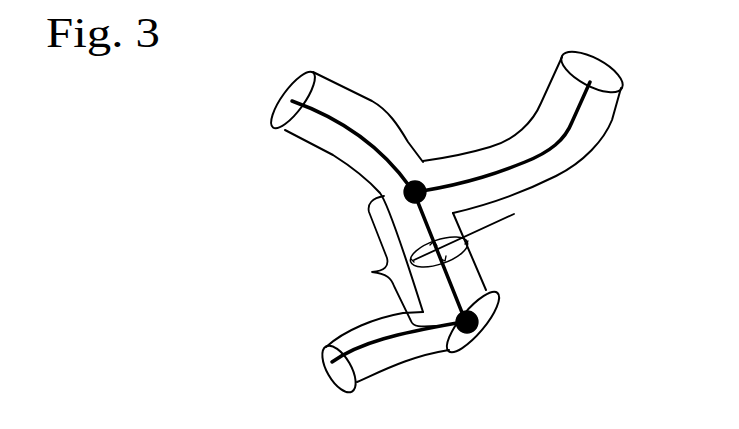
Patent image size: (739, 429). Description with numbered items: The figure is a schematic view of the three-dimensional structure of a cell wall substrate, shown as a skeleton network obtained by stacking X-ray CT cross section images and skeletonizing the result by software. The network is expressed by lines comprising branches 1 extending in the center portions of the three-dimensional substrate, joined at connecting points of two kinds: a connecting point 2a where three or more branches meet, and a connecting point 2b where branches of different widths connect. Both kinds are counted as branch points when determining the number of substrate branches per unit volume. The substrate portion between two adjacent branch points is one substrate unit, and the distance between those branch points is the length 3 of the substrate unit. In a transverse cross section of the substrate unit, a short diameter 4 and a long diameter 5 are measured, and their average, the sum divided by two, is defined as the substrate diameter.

The branch 1 is at (353, 133).
The connecting point of three or more branches 2a is at (420, 184).
The connecting point of different-width branches 2b is at (478, 326).
The length of the substrate unit 3 is at (372, 272).
The short diameter 4 is at (470, 232).
The long diameter 5 is at (462, 246).